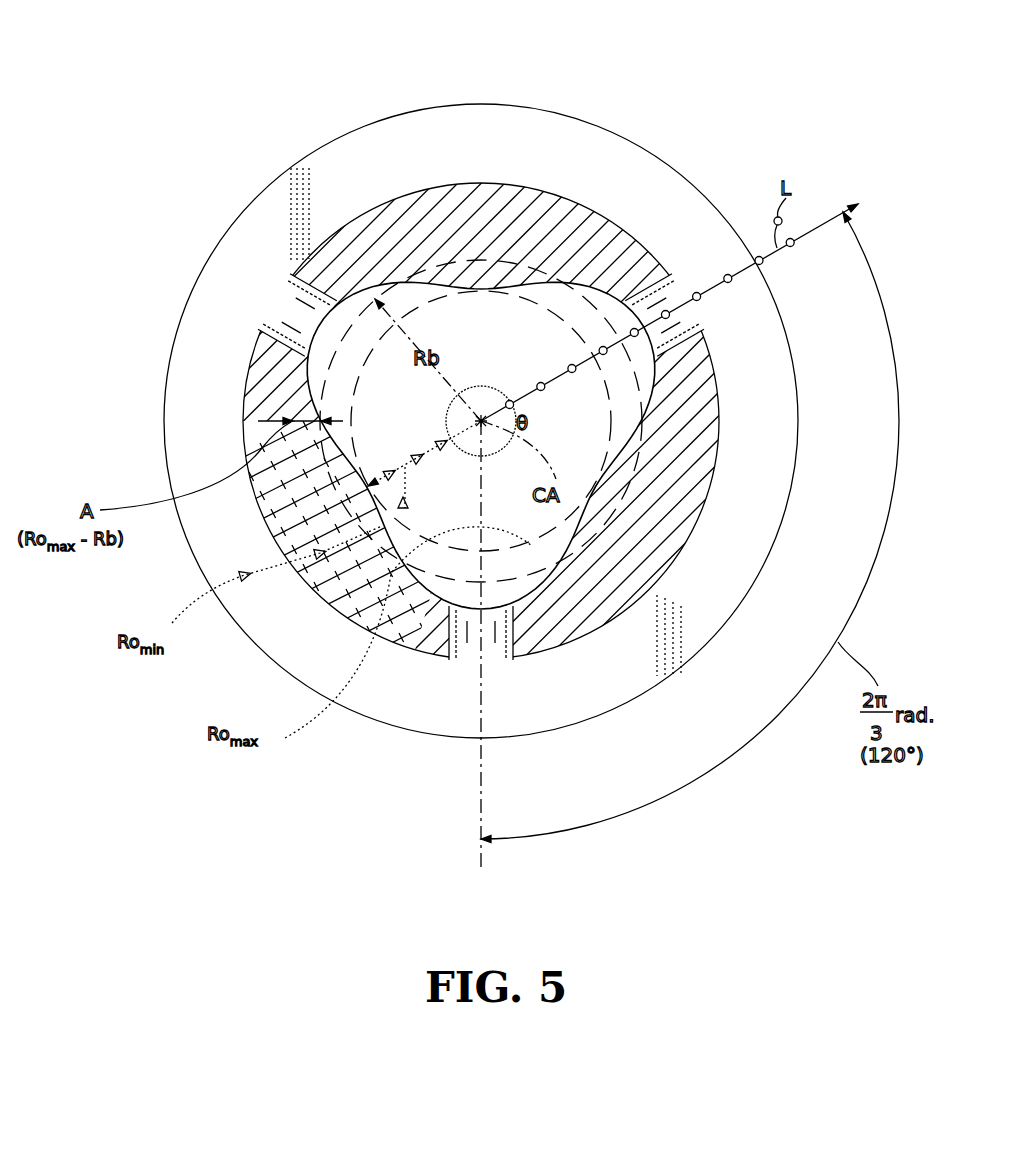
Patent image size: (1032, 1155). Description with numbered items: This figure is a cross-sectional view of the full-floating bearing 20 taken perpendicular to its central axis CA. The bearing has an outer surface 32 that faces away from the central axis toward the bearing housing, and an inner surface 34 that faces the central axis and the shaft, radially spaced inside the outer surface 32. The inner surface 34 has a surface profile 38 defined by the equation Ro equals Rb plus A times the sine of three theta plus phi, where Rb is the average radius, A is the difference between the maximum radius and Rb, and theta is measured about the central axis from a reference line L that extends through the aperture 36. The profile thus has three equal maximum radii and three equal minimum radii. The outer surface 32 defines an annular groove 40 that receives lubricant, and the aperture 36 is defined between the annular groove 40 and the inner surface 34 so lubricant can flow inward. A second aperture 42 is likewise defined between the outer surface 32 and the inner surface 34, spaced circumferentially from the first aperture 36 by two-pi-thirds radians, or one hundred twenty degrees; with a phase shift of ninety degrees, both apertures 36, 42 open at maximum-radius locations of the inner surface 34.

The full-floating bearing 20 is at (722, 51).
The outer surface 32 is at (499, 105).
The inner surface 34 is at (630, 458).
The aperture 36 is at (692, 325).
The surface profile 38 is at (600, 290).
The annular groove 40 is at (752, 471).
The second aperture 42 is at (493, 650).